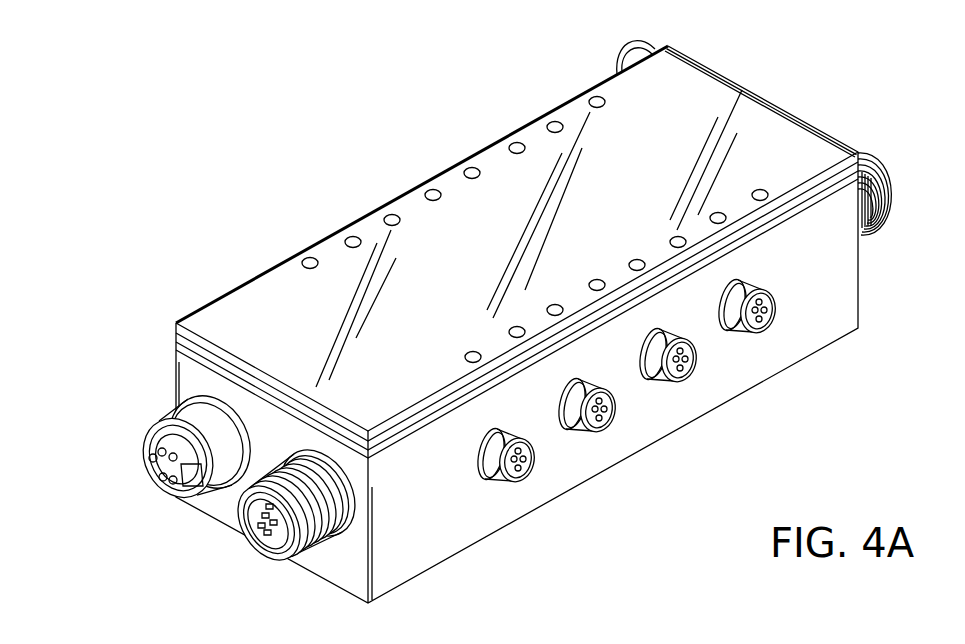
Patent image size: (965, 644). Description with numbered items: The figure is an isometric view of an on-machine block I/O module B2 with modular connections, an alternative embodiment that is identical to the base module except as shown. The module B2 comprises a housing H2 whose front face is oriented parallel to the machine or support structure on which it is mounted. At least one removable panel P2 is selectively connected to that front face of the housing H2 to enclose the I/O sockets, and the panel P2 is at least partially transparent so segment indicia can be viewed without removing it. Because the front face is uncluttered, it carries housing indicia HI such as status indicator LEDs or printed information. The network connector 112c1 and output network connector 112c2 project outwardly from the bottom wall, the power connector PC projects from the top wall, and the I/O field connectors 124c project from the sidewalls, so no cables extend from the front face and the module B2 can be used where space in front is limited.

The housing H2 is at (846, 266).
The I/O module B2 is at (440, 174).
The removable panel P2 is at (336, 255).
The housing indicia HI is at (555, 124).
The power connector PC is at (878, 175).
The I/O field connectors 124c is at (533, 452).
The network connector 112c1 is at (264, 526).
The output network connector 112c2 is at (155, 480).